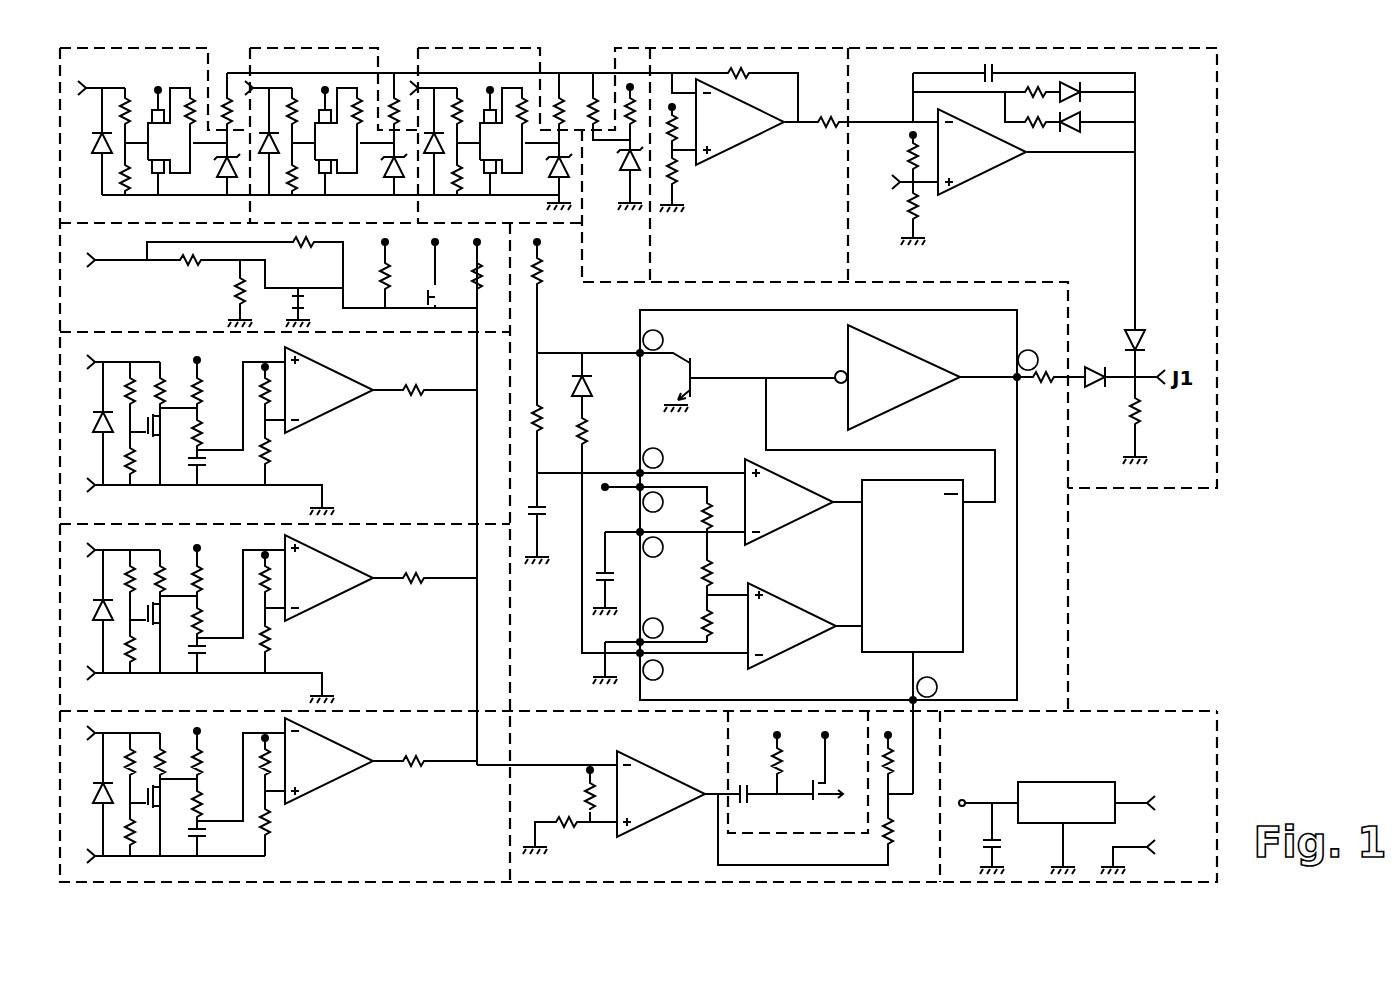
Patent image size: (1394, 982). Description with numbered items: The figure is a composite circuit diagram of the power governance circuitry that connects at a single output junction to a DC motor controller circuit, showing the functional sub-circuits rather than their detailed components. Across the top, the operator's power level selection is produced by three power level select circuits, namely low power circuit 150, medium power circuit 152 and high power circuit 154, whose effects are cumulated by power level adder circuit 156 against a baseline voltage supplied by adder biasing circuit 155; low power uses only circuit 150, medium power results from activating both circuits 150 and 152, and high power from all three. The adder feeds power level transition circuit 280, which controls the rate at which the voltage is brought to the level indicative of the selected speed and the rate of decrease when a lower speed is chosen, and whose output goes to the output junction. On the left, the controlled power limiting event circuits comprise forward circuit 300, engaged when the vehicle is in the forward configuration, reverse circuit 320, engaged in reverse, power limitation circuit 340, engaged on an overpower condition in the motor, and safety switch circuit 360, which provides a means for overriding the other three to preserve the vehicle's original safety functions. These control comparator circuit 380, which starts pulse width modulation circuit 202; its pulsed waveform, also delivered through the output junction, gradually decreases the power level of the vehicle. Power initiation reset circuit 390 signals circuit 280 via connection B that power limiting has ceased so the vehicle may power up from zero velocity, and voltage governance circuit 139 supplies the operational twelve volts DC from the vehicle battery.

The low power circuit 150 is at (131, 222).
The medium power circuit 152 is at (323, 222).
The high power circuit 154 is at (485, 222).
The adder biasing circuit 155 is at (598, 271).
The power level adder circuit 156 is at (727, 269).
The power level transition circuit 280 is at (980, 267).
The pulse width modulation circuit 202 is at (1025, 312).
The safety switch circuit 360 is at (129, 318).
The forward circuit 300 is at (410, 487).
The reverse circuit 320 is at (410, 672).
The power limitation circuit 340 is at (410, 870).
The comparator circuit 380 is at (653, 870).
The power initiation reset circuit 390 is at (783, 830).
The voltage governance circuit 139 is at (1053, 754).